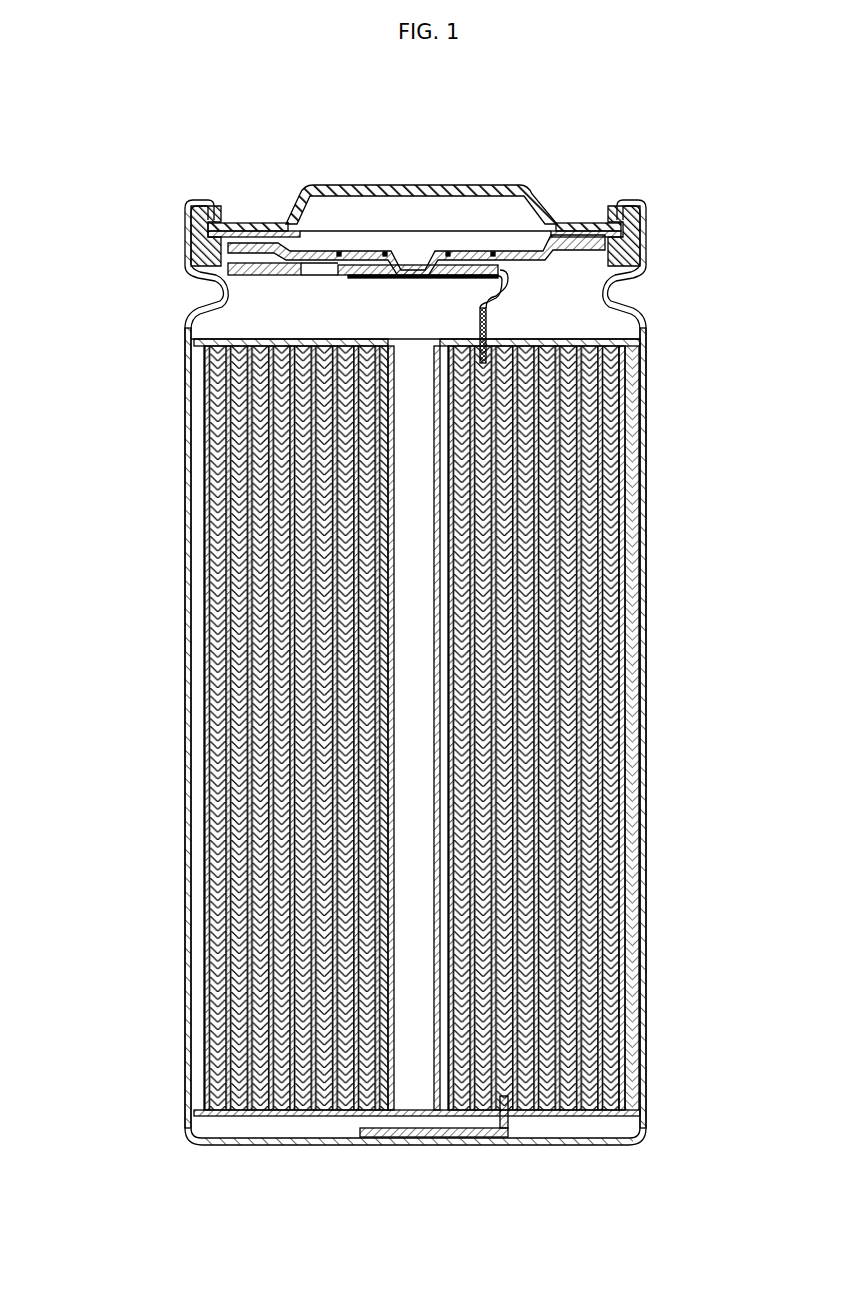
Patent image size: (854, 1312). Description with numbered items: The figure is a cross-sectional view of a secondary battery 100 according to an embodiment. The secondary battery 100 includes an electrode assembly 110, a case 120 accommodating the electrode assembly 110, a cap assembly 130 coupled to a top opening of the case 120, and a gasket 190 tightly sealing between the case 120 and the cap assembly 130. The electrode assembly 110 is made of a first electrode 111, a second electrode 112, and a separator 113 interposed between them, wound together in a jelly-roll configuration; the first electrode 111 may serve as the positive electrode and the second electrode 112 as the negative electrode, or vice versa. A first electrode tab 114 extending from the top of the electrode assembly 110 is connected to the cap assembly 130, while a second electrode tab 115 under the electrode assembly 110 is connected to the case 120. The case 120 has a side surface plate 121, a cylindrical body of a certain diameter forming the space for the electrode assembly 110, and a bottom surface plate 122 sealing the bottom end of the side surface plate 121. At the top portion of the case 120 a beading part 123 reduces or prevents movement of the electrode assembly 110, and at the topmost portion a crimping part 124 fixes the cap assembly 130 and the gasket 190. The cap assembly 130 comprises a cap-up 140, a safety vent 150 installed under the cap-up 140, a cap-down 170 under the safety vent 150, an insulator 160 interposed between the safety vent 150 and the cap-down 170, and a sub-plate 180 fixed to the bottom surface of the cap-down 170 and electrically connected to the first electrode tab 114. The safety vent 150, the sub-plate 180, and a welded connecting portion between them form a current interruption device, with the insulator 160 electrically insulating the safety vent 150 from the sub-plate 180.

The secondary battery 100 is at (150, 126).
The electrode assembly 110 is at (718, 377).
The first electrode 111 is at (607, 452).
The second electrode 112 is at (633, 382).
The separator 113 is at (613, 415).
The first electrode tab 114 is at (480, 310).
The second electrode tab 115 is at (452, 1139).
The case 120 is at (642, 561).
The side surface plate 121 is at (638, 924).
The bottom surface plate 122 is at (535, 1139).
The beading part 123 is at (605, 274).
The crimping part 124 is at (628, 190).
The cap assembly 130 is at (585, 101).
The cap-up 140 is at (437, 177).
The safety vent 150 is at (507, 242).
The insulator 160 is at (569, 215).
The cap-down 170 is at (362, 250).
The sub-plate 180 is at (343, 264).
The gasket 190 is at (637, 222).